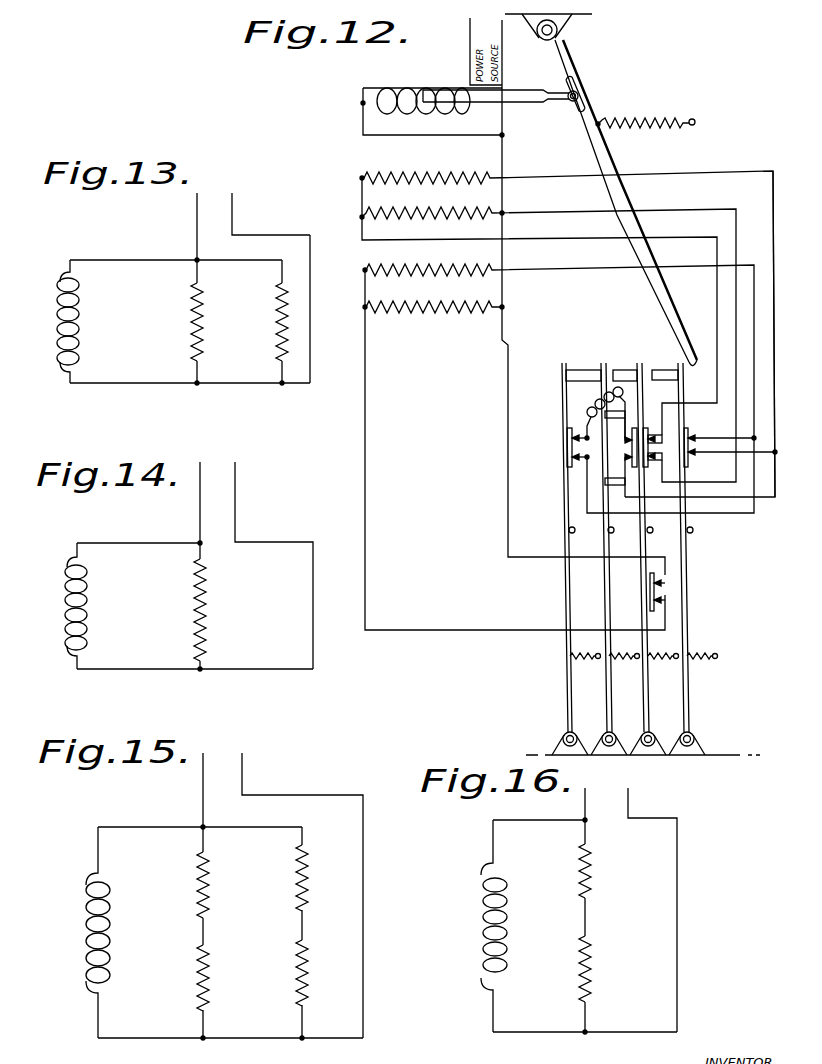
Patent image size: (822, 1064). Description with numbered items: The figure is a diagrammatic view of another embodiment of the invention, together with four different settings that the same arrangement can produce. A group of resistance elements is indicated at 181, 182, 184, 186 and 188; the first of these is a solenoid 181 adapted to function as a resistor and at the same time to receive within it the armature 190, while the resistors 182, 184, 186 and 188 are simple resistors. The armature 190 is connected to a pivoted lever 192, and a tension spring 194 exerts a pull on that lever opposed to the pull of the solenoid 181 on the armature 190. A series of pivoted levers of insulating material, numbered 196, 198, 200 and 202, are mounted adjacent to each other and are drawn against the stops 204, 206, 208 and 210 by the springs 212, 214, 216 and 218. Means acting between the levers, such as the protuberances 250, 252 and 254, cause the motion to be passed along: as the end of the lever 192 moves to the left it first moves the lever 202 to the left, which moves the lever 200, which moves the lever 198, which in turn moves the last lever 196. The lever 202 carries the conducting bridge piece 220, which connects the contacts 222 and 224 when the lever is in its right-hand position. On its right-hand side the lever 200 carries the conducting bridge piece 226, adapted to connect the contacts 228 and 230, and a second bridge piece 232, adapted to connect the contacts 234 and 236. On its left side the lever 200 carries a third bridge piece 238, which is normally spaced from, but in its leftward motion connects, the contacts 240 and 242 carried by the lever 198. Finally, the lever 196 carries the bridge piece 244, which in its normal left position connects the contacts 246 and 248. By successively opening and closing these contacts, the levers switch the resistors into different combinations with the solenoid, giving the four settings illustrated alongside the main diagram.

In FIG. 12, the solenoid 181 is at (410, 88).
In FIG. 13, the solenoid 181 is at (80, 290).
In FIG. 14, the solenoid 181 is at (85, 573).
In FIG. 15, the solenoid 181 is at (88, 876).
In FIG. 16, the solenoid 181 is at (481, 912).
In FIG. 12, the resistor 182 is at (362, 178).
In FIG. 13, the resistor 182 is at (192, 326).
In FIG. 14, the resistor 182 is at (210, 586).
In FIG. 15, the resistor 182 is at (212, 856).
In FIG. 16, the resistor 182 is at (595, 882).
In FIG. 12, the resistor 184 is at (362, 217).
In FIG. 15, the resistor 184 is at (212, 957).
In FIG. 16, the resistor 184 is at (595, 962).
In FIG. 12, the resistor 186 is at (374, 268).
In FIG. 13, the resistor 186 is at (278, 334).
In FIG. 15, the resistor 186 is at (298, 896).
In FIG. 12, the resistor 188 is at (375, 312).
In FIG. 15, the resistor 188 is at (298, 986).
In FIG. 12, the armature 190 is at (535, 100).
In FIG. 12, the pivoted lever 192 is at (660, 303).
In FIG. 12, the tension spring 194 is at (652, 120).
In FIG. 12, the pivoted lever 196 is at (567, 712).
In FIG. 12, the pivoted lever 198 is at (606, 710).
In FIG. 12, the pivoted lever 200 is at (650, 697).
In FIG. 12, the pivoted lever 202 is at (690, 716).
In FIG. 12, the stop 204 is at (568, 532).
In FIG. 12, the stop 206 is at (600, 538).
In FIG. 12, the stop 208 is at (653, 530).
In FIG. 12, the stop 210 is at (694, 528).
In FIG. 12, the spring 212 is at (572, 654).
In FIG. 12, the spring 214 is at (618, 662).
In FIG. 12, the spring 216 is at (663, 668).
In FIG. 12, the spring 218 is at (700, 660).
In FIG. 12, the conducting bridge piece 220 is at (690, 452).
In FIG. 12, the contact 222 is at (692, 455).
In FIG. 12, the contact 224 is at (692, 436).
In FIG. 12, the conducting bridge piece 226 is at (650, 440).
In FIG. 12, the contact 228 is at (650, 428).
In FIG. 12, the contact 230 is at (660, 463).
In FIG. 12, the second bridge piece 232 is at (660, 594).
In FIG. 12, the contact 234 is at (668, 585).
In FIG. 12, the contact 236 is at (668, 610).
In FIG. 12, the third bridge piece 238 is at (632, 445).
In FIG. 12, the contact 240 is at (623, 385).
In FIG. 12, the contact 242 is at (630, 500).
In FIG. 12, the bridge piece 244 is at (567, 448).
In FIG. 12, the contact 246 is at (580, 430).
In FIG. 12, the contact 248 is at (580, 458).
In FIG. 12, the protuberance 250 is at (667, 370).
In FIG. 12, the protuberance 252 is at (639, 362).
In FIG. 12, the protuberance 254 is at (566, 363).